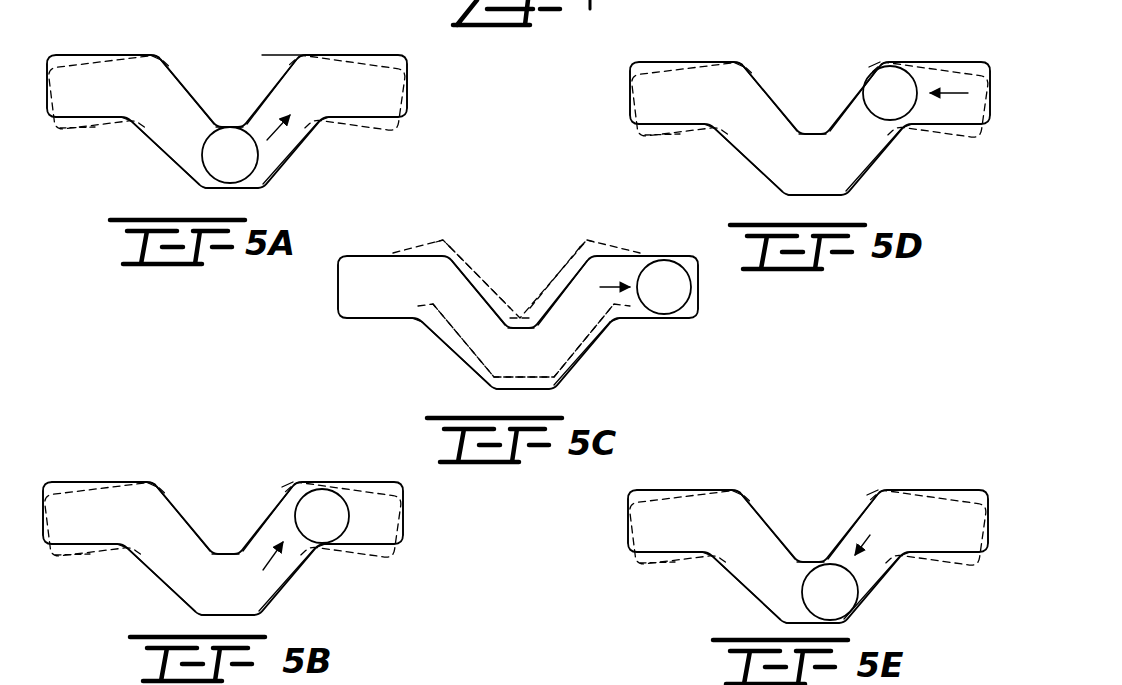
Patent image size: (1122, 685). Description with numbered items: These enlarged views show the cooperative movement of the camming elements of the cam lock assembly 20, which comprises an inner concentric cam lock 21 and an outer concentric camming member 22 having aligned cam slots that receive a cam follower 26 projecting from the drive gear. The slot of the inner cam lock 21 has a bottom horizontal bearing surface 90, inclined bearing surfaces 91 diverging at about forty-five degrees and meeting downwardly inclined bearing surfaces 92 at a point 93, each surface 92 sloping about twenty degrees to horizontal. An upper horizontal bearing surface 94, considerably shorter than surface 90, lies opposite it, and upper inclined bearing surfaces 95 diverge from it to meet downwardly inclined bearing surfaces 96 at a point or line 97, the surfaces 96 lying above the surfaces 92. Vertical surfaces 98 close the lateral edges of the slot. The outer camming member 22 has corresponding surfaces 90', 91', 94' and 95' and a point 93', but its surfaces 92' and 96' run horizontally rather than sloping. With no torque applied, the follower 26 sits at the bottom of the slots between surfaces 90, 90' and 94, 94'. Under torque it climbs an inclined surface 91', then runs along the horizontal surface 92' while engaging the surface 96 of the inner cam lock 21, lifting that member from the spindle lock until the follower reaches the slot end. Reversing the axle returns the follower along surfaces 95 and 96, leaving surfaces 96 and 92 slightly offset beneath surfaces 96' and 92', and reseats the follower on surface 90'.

In FIG. 5C, the cam lock assembly 20 is at (336, 305).
In FIG. 5B, the cam lock assembly 20 is at (52, 478).
In FIG. 5E, the cam lock assembly 20 is at (632, 487).
In FIG. 5A, the inner concentric cam lock 21 is at (408, 124).
In FIG. 5D, the inner concentric cam lock 21 is at (643, 142).
In FIG. 5C, the inner concentric cam lock 21 is at (453, 238).
In FIG. 5B, the inner concentric cam lock 21 is at (62, 560).
In FIG. 5A, the outer concentric camming member 22 is at (63, 48).
In FIG. 5D, the outer concentric camming member 22 is at (635, 58).
In FIG. 5A, the cam follower member 26 is at (258, 174).
In FIG. 5D, the cam follower member 26 is at (869, 75).
In FIG. 5C, the cam follower member 26 is at (693, 300).
In FIG. 5B, the cam follower member 26 is at (351, 517).
In FIG. 5E, the cam follower member 26 is at (859, 606).
In FIG. 5C, the bottom horizontal bearing surface 90 is at (531, 394).
In FIG. 5A, the lower horizontal bearing surface 90' is at (205, 201).
In FIG. 5D, the lower horizontal bearing surface 90' is at (811, 176).
In FIG. 5C, the lower horizontal bearing surface 90' is at (494, 400).
In FIG. 5B, the lower horizontal bearing surface 90' is at (223, 600).
In FIG. 5E, the lower horizontal bearing surface 90' is at (783, 625).
In FIG. 5C, the inclined bearing surface 91 is at (514, 340).
In FIG. 5A, the inclined bearing surface 91' is at (236, 153).
In FIG. 5D, the inclined bearing surface 91' is at (810, 160).
In FIG. 5C, the inclined bearing surface 91' is at (505, 356).
In FIG. 5B, the inclined bearing surface 91' is at (210, 586).
In FIG. 5E, the inclined bearing surface 91' is at (807, 587).
In FIG. 5A, the downwardly inclined bearing surface 92 is at (232, 144).
In FIG. 5D, the downwardly inclined bearing surface 92 is at (818, 157).
In FIG. 5B, the downwardly inclined bearing surface 92 is at (238, 559).
In FIG. 5E, the downwardly inclined bearing surface 92 is at (781, 569).
In FIG. 5A, the horizontal bearing surface 92' is at (253, 105).
In FIG. 5D, the horizontal bearing surface 92' is at (782, 159).
In FIG. 5C, the horizontal bearing surface 92' is at (511, 337).
In FIG. 5B, the horizontal bearing surface 92' is at (250, 538).
In FIG. 5E, the horizontal bearing surface 92' is at (808, 532).
In FIG. 5A, the intersection point 93 is at (322, 102).
In FIG. 5D, the intersection point 93 is at (916, 141).
In FIG. 5C, the intersection point 93 is at (516, 300).
In FIG. 5B, the intersection point 93 is at (314, 568).
In FIG. 5E, the intersection point 93 is at (915, 566).
In FIG. 5A, the intersection point 93' is at (111, 143).
In FIG. 5D, the intersection point 93' is at (697, 144).
In FIG. 5B, the intersection point 93' is at (109, 563).
In FIG. 5E, the intersection point 93' is at (697, 566).
In FIG. 5C, the upper horizontal bearing surface 94 is at (539, 330).
In FIG. 5A, the upper horizontal bearing surface 94' is at (236, 105).
In FIG. 5D, the upper horizontal bearing surface 94' is at (826, 143).
In FIG. 5C, the upper horizontal bearing surface 94' is at (507, 346).
In FIG. 5B, the upper horizontal bearing surface 94' is at (229, 538).
In FIG. 5E, the upper horizontal bearing surface 94' is at (816, 539).
In FIG. 5C, the upper inclined bearing surface 95 is at (515, 264).
In FIG. 5A, the upper inclined bearing surface 95' is at (228, 87).
In FIG. 5D, the upper inclined bearing surface 95' is at (811, 86).
In FIG. 5C, the upper inclined bearing surface 95' is at (519, 292).
In FIG. 5B, the upper inclined bearing surface 95' is at (224, 518).
In FIG. 5E, the upper inclined bearing surface 95' is at (809, 525).
In FIG. 5A, the downwardly inclined bearing surface 96 is at (215, 44).
In FIG. 5D, the downwardly inclined bearing surface 96 is at (808, 41).
In FIG. 5B, the downwardly inclined bearing surface 96 is at (226, 459).
In FIG. 5E, the downwardly inclined bearing surface 96 is at (809, 470).
In FIG. 5A, the horizontal bearing surface 96' is at (87, 43).
In FIG. 5D, the horizontal bearing surface 96' is at (805, 35).
In FIG. 5C, the horizontal bearing surface 96' is at (510, 237).
In FIG. 5B, the horizontal bearing surface 96' is at (220, 448).
In FIG. 5E, the horizontal bearing surface 96' is at (805, 457).
In FIG. 5A, the intersection line 97 is at (157, 52).
In FIG. 5D, the intersection line 97 is at (883, 60).
In FIG. 5C, the intersection line 97 is at (585, 240).
In FIG. 5B, the intersection line 97 is at (297, 480).
In FIG. 5E, the intersection line 97 is at (880, 483).
In FIG. 5A, the vertical surface 98 is at (407, 85).
In FIG. 5D, the vertical surface 98 is at (988, 100).
In FIG. 5C, the vertical surface 98 is at (692, 277).
In FIG. 5B, the vertical surface 98 is at (400, 495).
In FIG. 5E, the vertical surface 98 is at (983, 515).